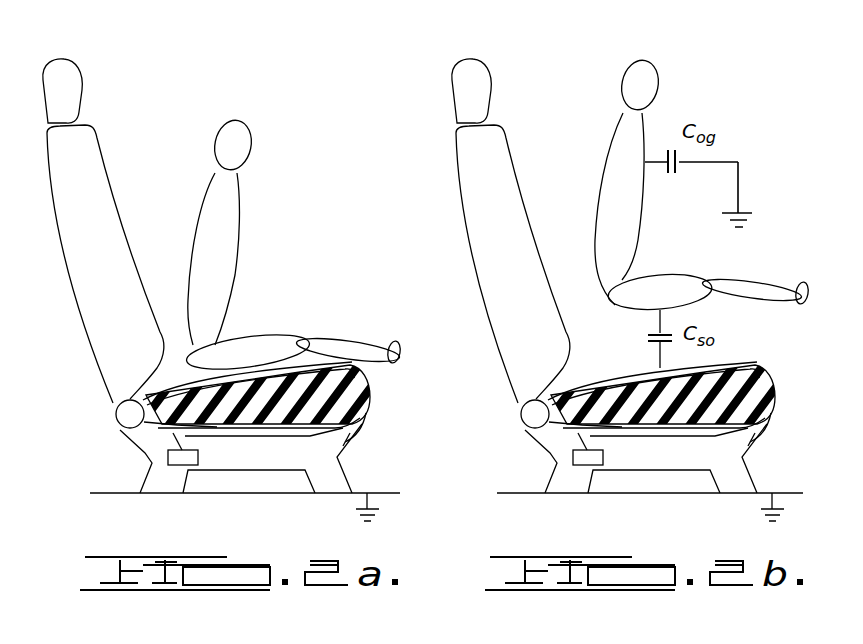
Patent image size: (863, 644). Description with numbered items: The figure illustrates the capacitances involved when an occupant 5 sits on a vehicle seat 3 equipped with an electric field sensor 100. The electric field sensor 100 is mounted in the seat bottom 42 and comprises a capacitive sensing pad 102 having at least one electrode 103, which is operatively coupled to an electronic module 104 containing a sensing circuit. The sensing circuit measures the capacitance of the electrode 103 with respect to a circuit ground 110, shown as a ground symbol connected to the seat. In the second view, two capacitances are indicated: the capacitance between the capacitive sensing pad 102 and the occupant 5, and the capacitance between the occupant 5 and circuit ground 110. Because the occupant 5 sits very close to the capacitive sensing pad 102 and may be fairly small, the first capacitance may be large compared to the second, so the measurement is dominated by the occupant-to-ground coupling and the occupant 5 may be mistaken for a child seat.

In FIG. 2A, the vehicle seat 3 is at (62, 239).
In FIG. 2B, the vehicle seat 3 is at (470, 228).
In FIG. 2A, the occupant 5 is at (237, 221).
In FIG. 2B, the occupant 5 is at (612, 130).
In FIG. 2A, the seat bottom 42 is at (363, 422).
In FIG. 2B, the seat bottom 42 is at (762, 428).
In FIG. 2A, the electric field sensor 100 is at (377, 380).
In FIG. 2B, the electric field sensor 100 is at (783, 380).
In FIG. 2A, the capacitive sensing pad 102 is at (197, 373).
In FIG. 2B, the capacitive sensing pad 102 is at (740, 363).
In FIG. 2A, the electrode 103 is at (123, 404).
In FIG. 2B, the electrode 103 is at (585, 424).
In FIG. 2A, the electronic module 104 is at (175, 457).
In FIG. 2B, the electronic module 104 is at (580, 458).
In FIG. 2A, the circuit ground 110 is at (363, 500).
In FIG. 2B, the circuit ground 110 is at (768, 500).